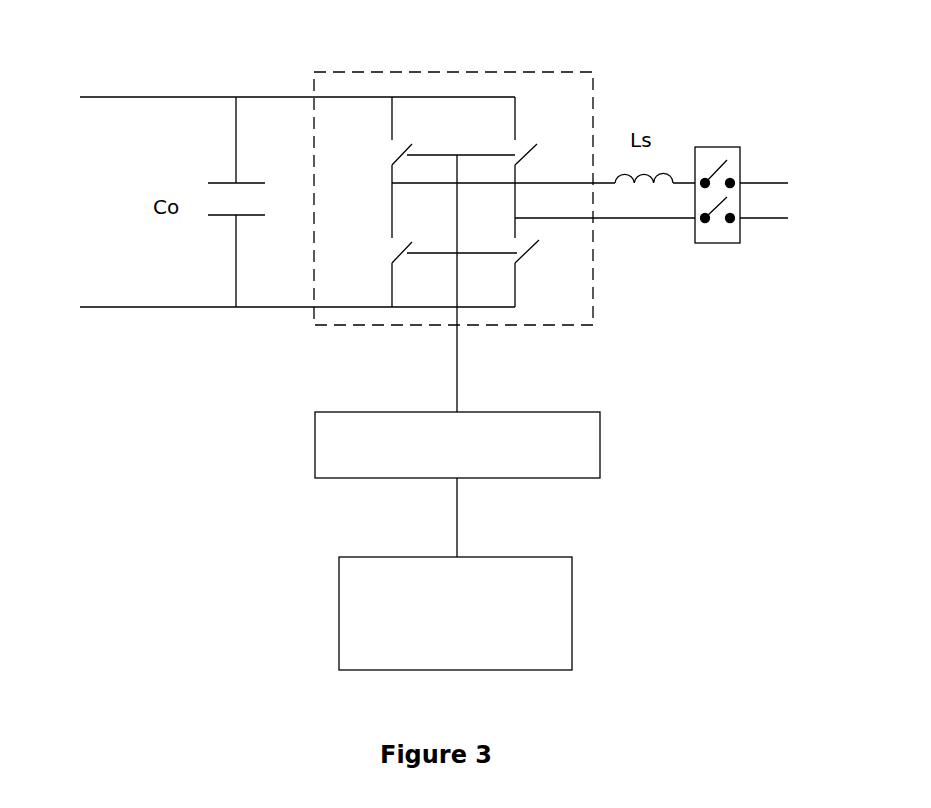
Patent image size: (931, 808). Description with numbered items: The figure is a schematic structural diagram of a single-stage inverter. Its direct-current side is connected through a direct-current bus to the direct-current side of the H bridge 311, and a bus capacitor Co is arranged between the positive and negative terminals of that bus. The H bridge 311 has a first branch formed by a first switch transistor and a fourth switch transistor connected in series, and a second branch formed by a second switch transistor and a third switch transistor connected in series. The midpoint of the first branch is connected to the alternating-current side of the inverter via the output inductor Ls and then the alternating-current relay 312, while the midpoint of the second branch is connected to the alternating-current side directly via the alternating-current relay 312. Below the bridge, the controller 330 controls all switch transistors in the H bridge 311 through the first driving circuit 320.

The H bridge 311 is at (595, 95).
The alternating-current relay 312 is at (723, 247).
The first driving circuit 320 is at (315, 462).
The controller 330 is at (573, 617).